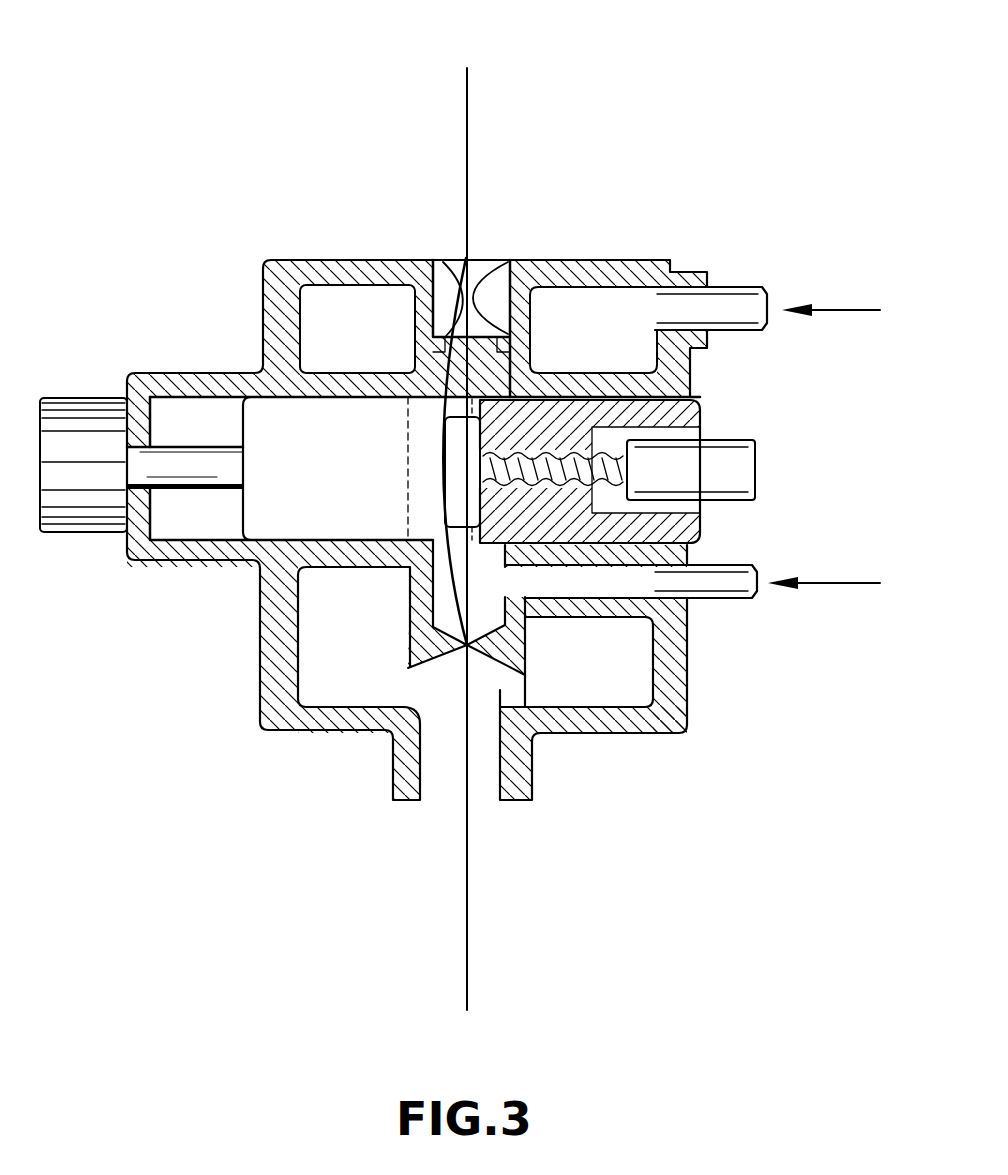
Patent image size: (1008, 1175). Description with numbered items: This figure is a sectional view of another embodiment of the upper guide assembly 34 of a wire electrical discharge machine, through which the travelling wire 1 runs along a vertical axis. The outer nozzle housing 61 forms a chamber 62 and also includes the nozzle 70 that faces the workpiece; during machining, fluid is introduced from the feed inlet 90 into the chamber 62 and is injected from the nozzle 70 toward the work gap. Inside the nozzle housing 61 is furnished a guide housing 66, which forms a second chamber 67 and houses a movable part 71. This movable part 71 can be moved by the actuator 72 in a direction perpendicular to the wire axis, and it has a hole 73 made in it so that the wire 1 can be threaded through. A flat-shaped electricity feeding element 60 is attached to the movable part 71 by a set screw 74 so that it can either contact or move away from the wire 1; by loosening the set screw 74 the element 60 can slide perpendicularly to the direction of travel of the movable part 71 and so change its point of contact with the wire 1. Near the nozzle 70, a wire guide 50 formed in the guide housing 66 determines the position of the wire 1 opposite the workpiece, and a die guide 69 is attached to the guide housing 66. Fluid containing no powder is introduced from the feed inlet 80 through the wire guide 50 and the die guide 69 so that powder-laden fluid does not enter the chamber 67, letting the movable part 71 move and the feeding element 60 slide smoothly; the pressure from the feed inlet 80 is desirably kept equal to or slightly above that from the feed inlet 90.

The wire 1 is at (468, 101).
The valve assembly 34 is at (674, 79).
The wire guide 50 is at (435, 652).
The electricity feeding element 60 is at (497, 412).
The nozzle housing 61 is at (274, 258).
The chamber 62 is at (357, 302).
The guide housing 66 is at (412, 590).
The chamber 67 is at (447, 613).
The die guide 69 is at (498, 266).
The nozzle 70 is at (480, 800).
The movable part 71 is at (707, 401).
The actuator 72 is at (78, 495).
The hole 73 is at (424, 497).
The set screw 74 is at (735, 473).
The feed inlet 80 is at (727, 598).
The feed inlet 90 is at (748, 331).